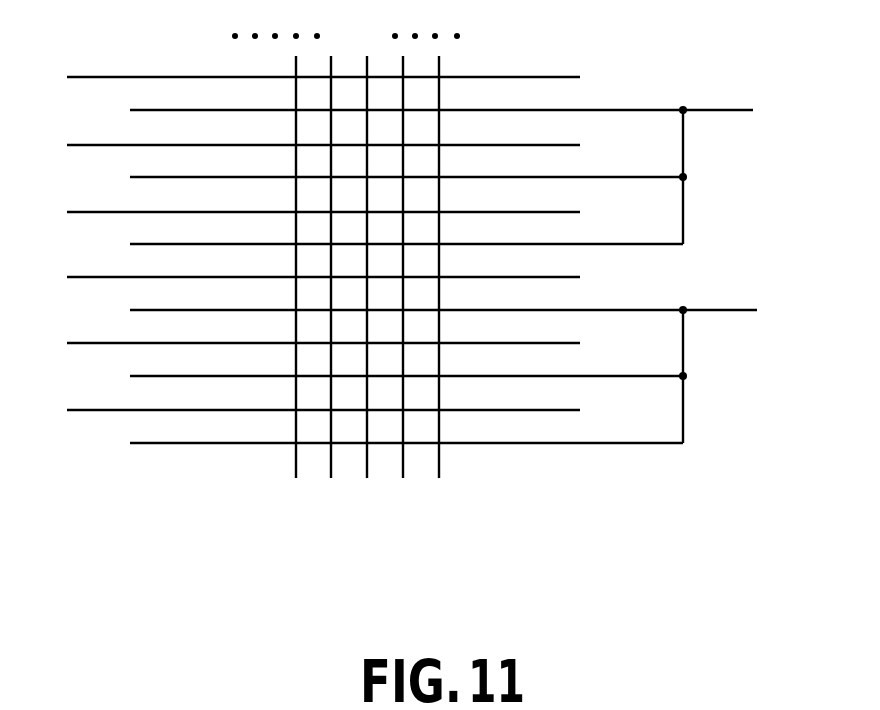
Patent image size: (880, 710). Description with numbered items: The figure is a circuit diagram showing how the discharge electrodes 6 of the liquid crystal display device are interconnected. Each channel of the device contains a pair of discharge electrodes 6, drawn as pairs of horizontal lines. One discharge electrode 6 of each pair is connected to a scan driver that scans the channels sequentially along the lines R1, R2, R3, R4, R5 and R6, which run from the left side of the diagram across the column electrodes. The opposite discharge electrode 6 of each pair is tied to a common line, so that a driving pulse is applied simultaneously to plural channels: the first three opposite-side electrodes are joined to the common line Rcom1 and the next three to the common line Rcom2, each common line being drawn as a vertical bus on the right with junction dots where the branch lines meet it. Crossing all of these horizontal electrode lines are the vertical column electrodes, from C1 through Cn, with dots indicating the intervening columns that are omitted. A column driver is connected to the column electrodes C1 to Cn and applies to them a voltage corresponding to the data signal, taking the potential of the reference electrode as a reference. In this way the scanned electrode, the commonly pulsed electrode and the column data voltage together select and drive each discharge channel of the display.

The discharge electrodes 6 is at (433, 271).
The first scan line R1 is at (304, 75).
The second scan line R2 is at (304, 143).
The third scan line R3 is at (304, 210).
The fourth scan line R4 is at (304, 275).
The fifth scan line R5 is at (304, 341).
The sixth scan line R6 is at (304, 408).
The first common line Rcom1 is at (484, 167).
The second common line Rcom2 is at (483, 367).
The first column electrode C1 is at (243, 250).
The n-th column electrode Cn is at (363, 250).